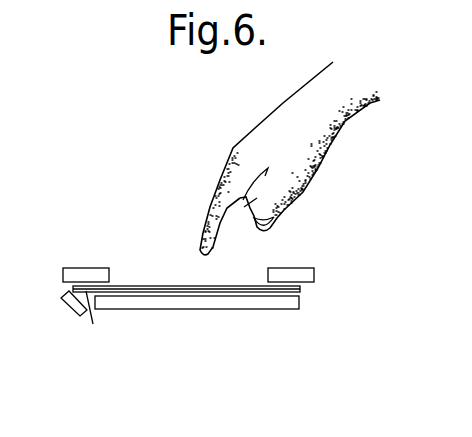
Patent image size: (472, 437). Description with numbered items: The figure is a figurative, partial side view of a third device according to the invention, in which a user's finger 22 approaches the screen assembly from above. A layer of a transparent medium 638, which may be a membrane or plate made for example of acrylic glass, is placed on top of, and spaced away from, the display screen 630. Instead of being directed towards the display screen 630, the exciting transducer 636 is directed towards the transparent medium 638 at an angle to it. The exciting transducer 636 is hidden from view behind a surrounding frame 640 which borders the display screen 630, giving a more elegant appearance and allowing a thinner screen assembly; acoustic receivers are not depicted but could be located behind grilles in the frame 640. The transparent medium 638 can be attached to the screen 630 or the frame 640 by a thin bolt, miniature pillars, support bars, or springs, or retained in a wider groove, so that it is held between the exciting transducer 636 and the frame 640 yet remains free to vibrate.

The finger of a user 22 is at (257, 147).
The surrounding frame 640 is at (85, 265).
The transparent medium 638 is at (300, 289).
The display screen 630 is at (232, 303).
The exciting transducer 636 is at (67, 314).